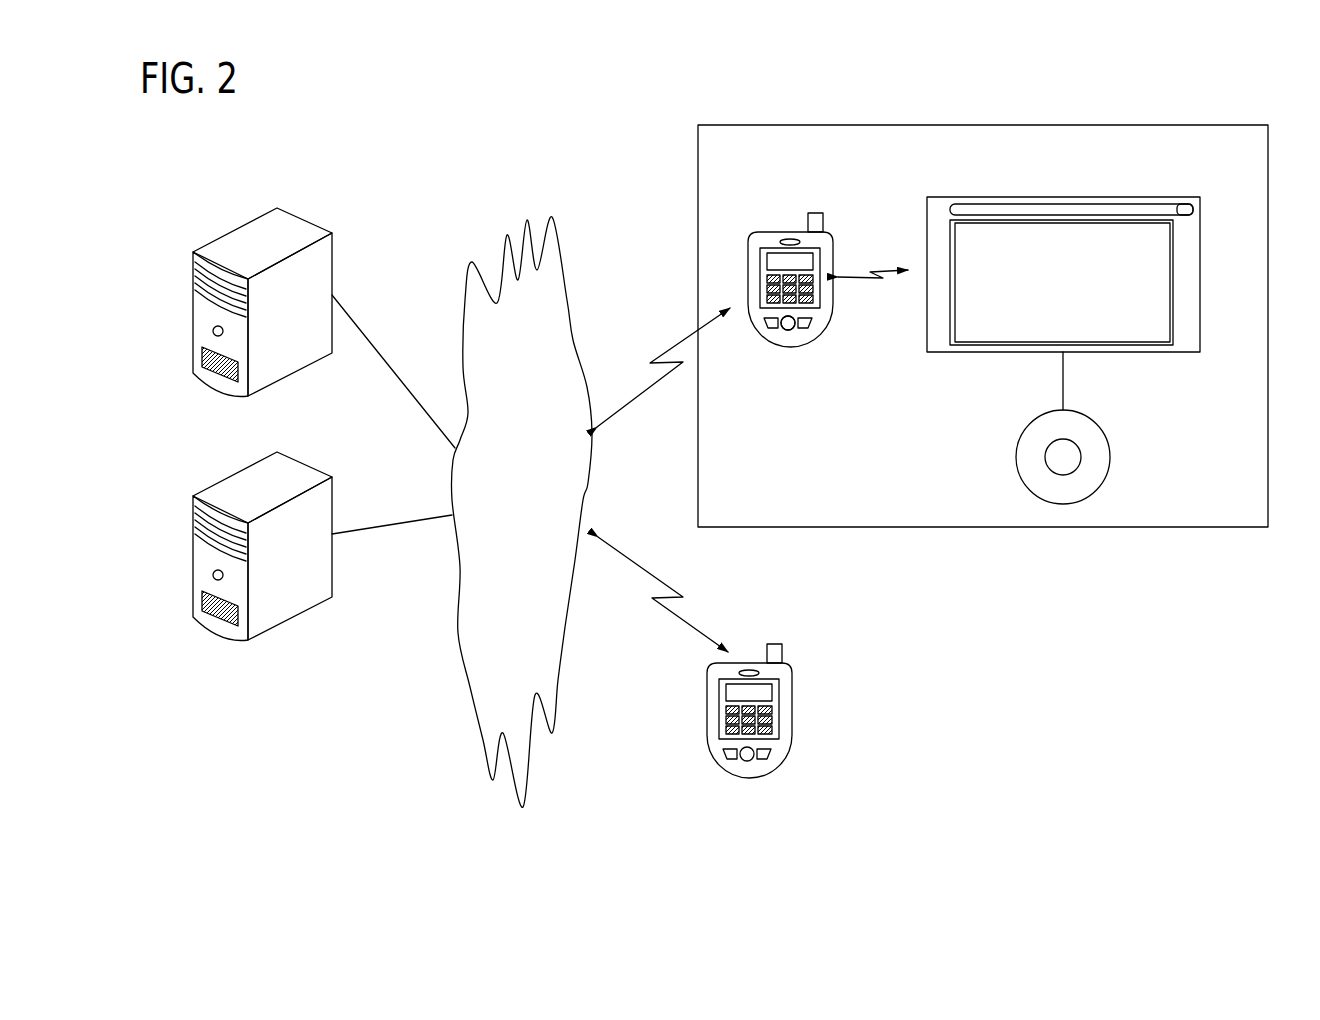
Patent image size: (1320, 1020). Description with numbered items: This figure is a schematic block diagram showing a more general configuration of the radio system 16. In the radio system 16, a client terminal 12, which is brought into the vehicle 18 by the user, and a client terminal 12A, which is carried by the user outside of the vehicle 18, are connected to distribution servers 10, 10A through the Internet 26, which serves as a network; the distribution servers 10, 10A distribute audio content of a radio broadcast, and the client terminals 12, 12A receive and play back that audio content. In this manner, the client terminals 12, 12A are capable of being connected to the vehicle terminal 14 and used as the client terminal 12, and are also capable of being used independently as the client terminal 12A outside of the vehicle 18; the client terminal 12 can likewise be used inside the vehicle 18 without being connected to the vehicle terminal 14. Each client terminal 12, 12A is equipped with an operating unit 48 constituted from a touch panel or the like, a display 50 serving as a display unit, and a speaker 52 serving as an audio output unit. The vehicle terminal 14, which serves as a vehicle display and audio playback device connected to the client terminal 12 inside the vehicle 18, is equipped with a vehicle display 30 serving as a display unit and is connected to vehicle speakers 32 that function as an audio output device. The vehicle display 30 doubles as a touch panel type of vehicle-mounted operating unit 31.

The radio system 16 is at (479, 141).
The distribution server 10 is at (193, 306).
The distribution server 10A is at (193, 551).
The Internet 26 is at (473, 263).
The vehicle 18 is at (1062, 123).
The client terminal 12 is at (748, 256).
The client terminal 12A is at (708, 688).
The display 50 is at (813, 258).
The operating unit 48 is at (813, 297).
The speaker 52 is at (788, 333).
The vehicle terminal 14 is at (1062, 196).
The vehicle display 30 is at (1152, 296).
The vehicle-mounted operating unit 31 is at (1143, 328).
The vehicle speakers 32 is at (1110, 447).